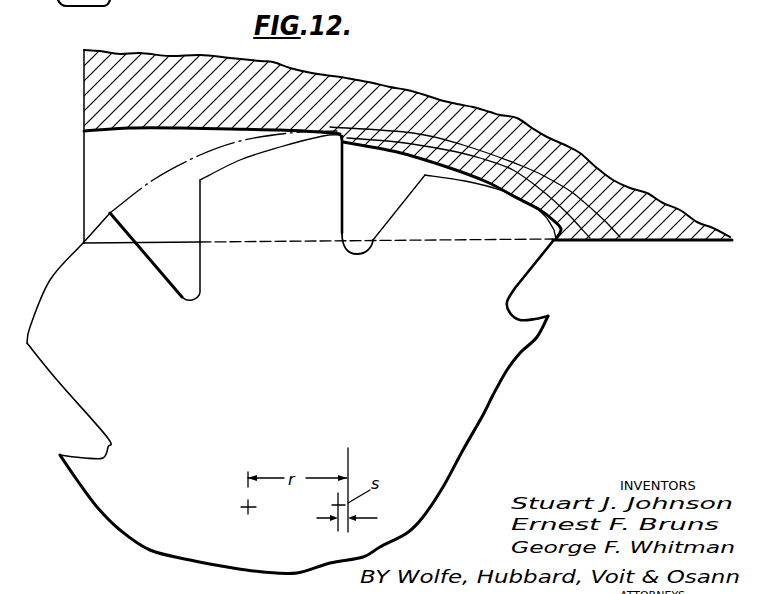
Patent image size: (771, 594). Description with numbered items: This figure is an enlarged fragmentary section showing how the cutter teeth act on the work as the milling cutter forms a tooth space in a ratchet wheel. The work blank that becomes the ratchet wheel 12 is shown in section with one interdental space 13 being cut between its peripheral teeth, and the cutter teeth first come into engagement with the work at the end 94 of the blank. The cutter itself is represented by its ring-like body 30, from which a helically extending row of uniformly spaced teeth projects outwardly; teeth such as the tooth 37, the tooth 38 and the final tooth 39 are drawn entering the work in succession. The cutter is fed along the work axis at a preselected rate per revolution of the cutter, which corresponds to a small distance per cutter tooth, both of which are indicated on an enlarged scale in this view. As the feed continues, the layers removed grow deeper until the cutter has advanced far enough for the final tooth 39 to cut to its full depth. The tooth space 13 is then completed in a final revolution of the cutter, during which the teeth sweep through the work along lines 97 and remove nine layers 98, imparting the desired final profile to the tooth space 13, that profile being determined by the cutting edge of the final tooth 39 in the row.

The ratchet wheel 12 is at (98, 94).
The interdental space 13 is at (112, 154).
The end 94 is at (85, 193).
The lines 97 is at (481, 178).
The layers 98 is at (348, 140).
The tooth 37 is at (419, 209).
The tooth 38 is at (214, 213).
The final tooth 39 is at (76, 297).
The ring-like body 30 is at (492, 367).